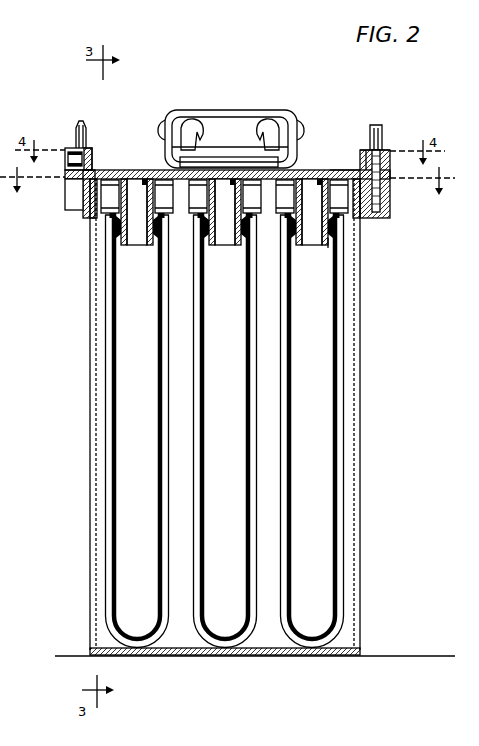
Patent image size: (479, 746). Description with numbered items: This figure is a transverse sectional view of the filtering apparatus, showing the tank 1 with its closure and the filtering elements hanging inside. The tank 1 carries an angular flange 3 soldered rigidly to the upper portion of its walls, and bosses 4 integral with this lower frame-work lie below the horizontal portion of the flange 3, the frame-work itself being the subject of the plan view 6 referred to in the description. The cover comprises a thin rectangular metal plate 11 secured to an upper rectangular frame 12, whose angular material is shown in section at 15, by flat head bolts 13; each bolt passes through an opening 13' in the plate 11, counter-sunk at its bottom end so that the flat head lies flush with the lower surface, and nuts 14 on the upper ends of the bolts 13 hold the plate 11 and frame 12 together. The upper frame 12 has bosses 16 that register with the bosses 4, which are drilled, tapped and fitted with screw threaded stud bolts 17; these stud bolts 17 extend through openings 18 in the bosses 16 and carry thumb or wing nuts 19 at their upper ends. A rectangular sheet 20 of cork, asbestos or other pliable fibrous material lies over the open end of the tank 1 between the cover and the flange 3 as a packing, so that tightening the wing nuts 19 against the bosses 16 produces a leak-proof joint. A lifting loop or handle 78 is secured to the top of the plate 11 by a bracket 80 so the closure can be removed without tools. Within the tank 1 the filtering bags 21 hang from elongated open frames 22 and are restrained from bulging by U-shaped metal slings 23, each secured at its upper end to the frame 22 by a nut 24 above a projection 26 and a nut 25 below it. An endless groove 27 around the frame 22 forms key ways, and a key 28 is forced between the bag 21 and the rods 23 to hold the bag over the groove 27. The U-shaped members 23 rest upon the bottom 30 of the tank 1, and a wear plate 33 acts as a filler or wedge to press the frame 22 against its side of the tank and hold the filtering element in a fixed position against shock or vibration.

The tank 1 is at (361, 437).
The flange 3 is at (92, 215).
The bosses 4 is at (76, 196).
The section line 6 is at (228, 179).
The metal plate 11 is at (312, 188).
The rectangular frame 12 is at (340, 170).
The flat head bolts 13 is at (108, 173).
The opening 13' is at (51, 198).
The nuts 14 is at (70, 152).
The angular material 15 is at (88, 158).
The bosses 16 is at (390, 152).
The stud bolts 17 is at (382, 186).
The openings 18 is at (372, 160).
The wing nuts 19 is at (80, 122).
The sheet 20 is at (145, 170).
The filtering bags 21 is at (201, 383).
The frame 22 is at (320, 240).
The slings 23 is at (97, 327).
The nut 24 is at (205, 170).
The nut 25 is at (203, 215).
The projection 26 is at (118, 232).
The groove 27 is at (240, 247).
The key 28 is at (113, 248).
The bottom 30 is at (330, 655).
The wear plate 33 is at (300, 186).
The lifting loop 78 is at (238, 105).
The bracket 80 is at (234, 160).